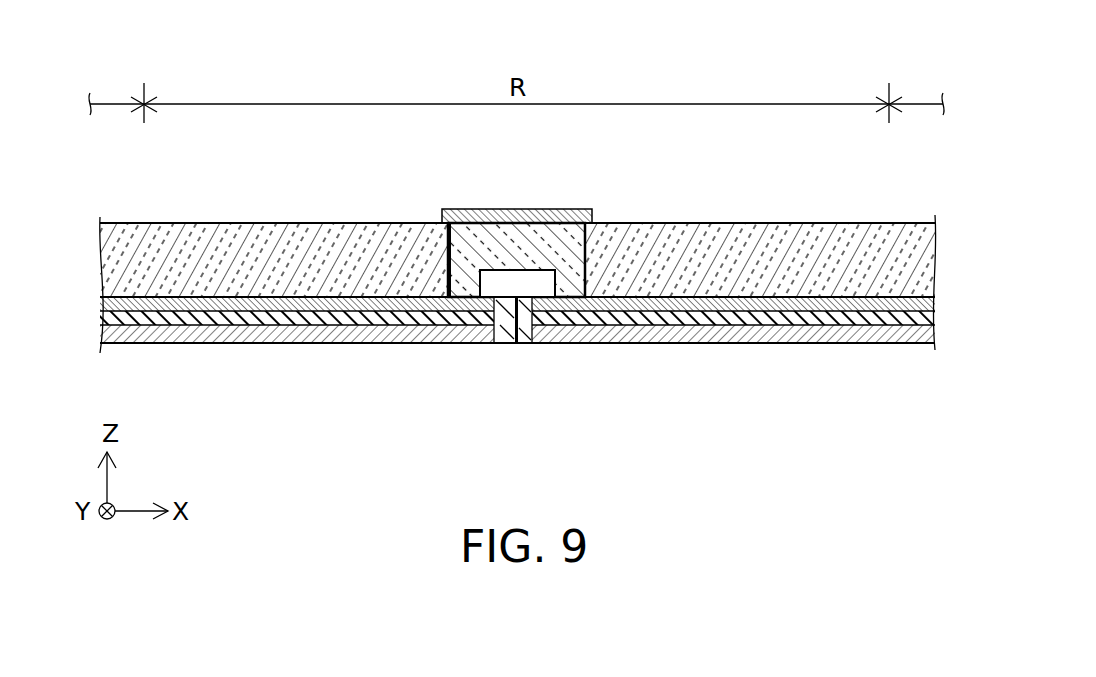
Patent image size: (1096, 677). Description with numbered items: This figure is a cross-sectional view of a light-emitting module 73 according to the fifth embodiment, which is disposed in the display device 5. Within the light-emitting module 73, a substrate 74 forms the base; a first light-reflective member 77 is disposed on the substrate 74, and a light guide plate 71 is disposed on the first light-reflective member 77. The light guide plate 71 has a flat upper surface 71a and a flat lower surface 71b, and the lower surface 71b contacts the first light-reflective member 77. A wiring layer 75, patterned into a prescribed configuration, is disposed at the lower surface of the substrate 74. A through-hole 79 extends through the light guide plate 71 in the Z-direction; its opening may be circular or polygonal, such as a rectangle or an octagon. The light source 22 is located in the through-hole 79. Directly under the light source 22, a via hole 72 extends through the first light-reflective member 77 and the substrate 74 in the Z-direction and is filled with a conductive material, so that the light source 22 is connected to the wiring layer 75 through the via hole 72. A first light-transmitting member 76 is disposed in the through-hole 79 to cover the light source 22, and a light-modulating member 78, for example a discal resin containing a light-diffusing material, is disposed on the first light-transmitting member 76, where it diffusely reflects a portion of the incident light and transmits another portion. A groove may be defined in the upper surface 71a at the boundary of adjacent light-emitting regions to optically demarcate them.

The display device 5 is at (845, 70).
The light-emitting module 73 is at (924, 202).
The light guide plate 71 is at (313, 245).
The upper surface 71a is at (210, 222).
The lower surface 71b is at (230, 298).
The first light-reflective member 77 is at (335, 303).
The substrate 74 is at (280, 317).
The wiring layer 75 is at (150, 335).
The first light-transmitting member 76 is at (520, 248).
The through-hole 79 is at (452, 262).
The light-modulating member 78 is at (557, 218).
The light source 22 is at (493, 290).
The via hole 72 is at (517, 315).